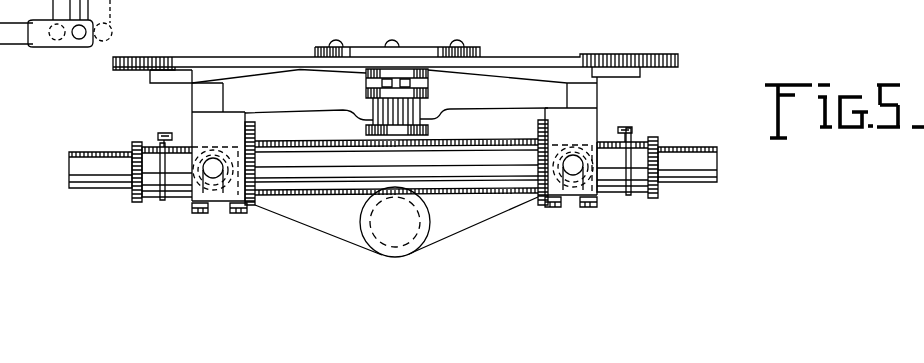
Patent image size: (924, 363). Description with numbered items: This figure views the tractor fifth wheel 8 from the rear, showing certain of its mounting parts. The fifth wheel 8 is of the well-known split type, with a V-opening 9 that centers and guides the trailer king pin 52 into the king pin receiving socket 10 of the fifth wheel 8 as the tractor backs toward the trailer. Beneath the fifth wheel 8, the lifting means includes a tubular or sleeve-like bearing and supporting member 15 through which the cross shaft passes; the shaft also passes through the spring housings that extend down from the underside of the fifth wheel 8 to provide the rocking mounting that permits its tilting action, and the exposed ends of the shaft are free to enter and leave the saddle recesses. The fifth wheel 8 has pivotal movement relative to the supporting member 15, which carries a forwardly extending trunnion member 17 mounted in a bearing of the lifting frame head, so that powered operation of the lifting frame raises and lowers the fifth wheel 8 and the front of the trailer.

The tractor fifth wheel 8 is at (538, 72).
The V-opening 9 is at (320, 100).
The king pin receiving socket 10 is at (425, 99).
The tubular bearing and supporting member 15 is at (497, 182).
The trunnion member 17 is at (413, 248).
The king pin 52 is at (397, 112).